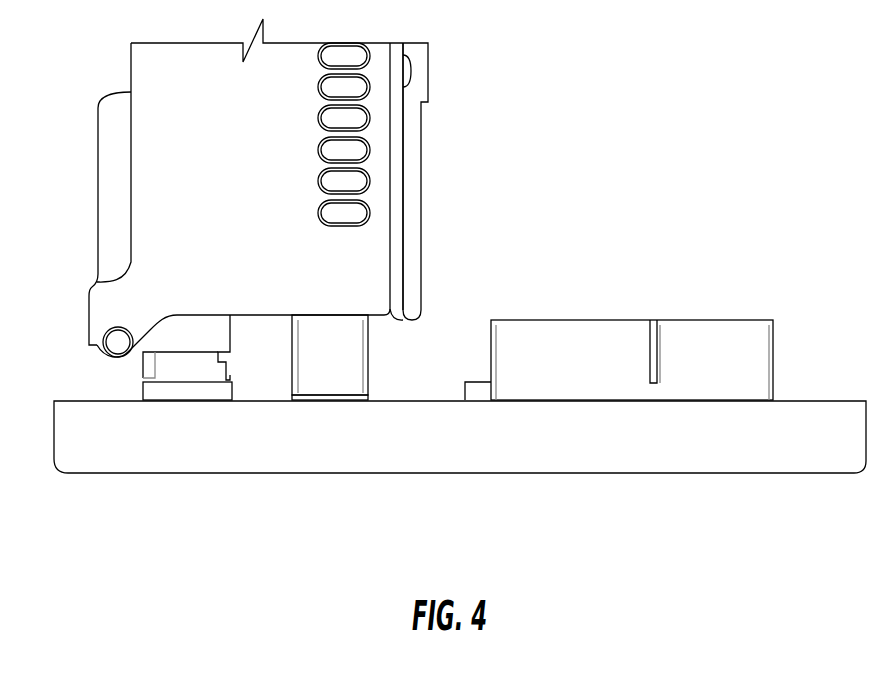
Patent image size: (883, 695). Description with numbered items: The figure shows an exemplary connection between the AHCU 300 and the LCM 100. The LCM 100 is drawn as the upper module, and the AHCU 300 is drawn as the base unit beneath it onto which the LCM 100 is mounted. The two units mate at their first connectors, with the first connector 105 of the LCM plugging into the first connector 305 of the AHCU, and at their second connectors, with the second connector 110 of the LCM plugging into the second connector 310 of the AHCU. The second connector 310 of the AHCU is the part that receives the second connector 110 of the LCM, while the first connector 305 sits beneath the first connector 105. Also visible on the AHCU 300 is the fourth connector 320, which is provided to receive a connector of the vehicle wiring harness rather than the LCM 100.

The LCM 100 is at (420, 180).
The first connector 105 is at (380, 375).
The second connector 110 is at (130, 379).
The AHCU 300 is at (635, 492).
The first connector 305 is at (322, 398).
The second connector 310 is at (183, 393).
The fourth connector 320 is at (596, 318).